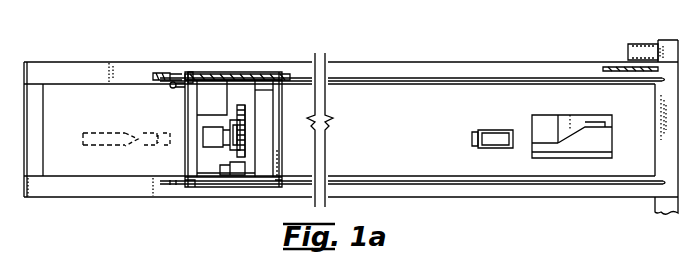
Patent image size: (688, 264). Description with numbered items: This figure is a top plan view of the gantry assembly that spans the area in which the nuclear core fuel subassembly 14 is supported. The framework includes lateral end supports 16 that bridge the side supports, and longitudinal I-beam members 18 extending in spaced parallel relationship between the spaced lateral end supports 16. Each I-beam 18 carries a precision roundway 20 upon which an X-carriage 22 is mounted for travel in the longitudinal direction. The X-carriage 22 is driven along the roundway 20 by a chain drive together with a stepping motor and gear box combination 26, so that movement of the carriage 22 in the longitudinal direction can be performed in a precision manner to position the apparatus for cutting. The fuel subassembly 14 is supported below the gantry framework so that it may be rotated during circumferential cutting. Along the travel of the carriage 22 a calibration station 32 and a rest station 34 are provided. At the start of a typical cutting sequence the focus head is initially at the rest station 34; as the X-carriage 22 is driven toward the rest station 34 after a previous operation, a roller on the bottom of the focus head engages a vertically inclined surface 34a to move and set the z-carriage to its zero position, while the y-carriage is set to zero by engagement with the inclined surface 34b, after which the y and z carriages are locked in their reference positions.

The nuclear core fuel subassembly 14 is at (125, 147).
The lateral end supports 16 is at (655, 100).
The longitudinal I-beam members 18 is at (447, 62).
The precision roundway 20 is at (362, 77).
The X-carriage 22 is at (298, 163).
The stepping motor and gear box combination 26 is at (648, 43).
The calibration station 32 is at (483, 129).
The rest station 34 is at (578, 124).
The vertically inclined surface 34a is at (548, 128).
The inclined surface 34b is at (571, 126).